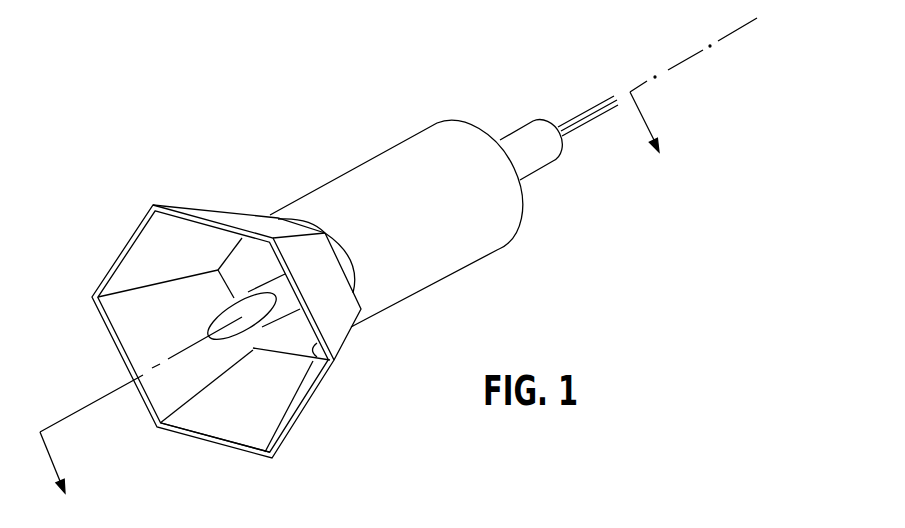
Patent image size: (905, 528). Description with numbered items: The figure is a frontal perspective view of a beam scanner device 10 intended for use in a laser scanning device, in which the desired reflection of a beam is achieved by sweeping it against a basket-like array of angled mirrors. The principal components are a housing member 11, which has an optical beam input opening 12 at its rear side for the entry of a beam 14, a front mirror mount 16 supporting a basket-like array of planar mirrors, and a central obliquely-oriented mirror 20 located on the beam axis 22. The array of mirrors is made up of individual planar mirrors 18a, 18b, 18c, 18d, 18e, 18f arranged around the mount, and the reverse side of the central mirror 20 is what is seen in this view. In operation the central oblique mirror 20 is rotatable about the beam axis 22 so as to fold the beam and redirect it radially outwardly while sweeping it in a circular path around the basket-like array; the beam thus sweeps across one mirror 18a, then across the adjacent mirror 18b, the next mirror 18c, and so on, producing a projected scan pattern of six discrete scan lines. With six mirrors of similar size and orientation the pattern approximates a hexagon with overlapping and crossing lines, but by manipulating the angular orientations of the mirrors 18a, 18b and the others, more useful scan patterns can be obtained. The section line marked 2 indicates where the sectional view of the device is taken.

The beam scanner device 10 is at (444, 203).
The housing member 11 is at (448, 262).
The optical beam input opening 12 is at (563, 140).
The beam 14 is at (590, 113).
The front mirror mount 16 is at (169, 196).
The mirror 18a is at (133, 345).
The mirror 18b is at (140, 259).
The mirror 18c is at (227, 227).
The mirror 18d is at (333, 360).
The mirror 18e is at (308, 381).
The mirror 18f is at (225, 428).
The central obliquely-oriented mirror 20 is at (250, 322).
The beam axis 22 is at (100, 400).
The section line 2- 2 is at (354, 304).